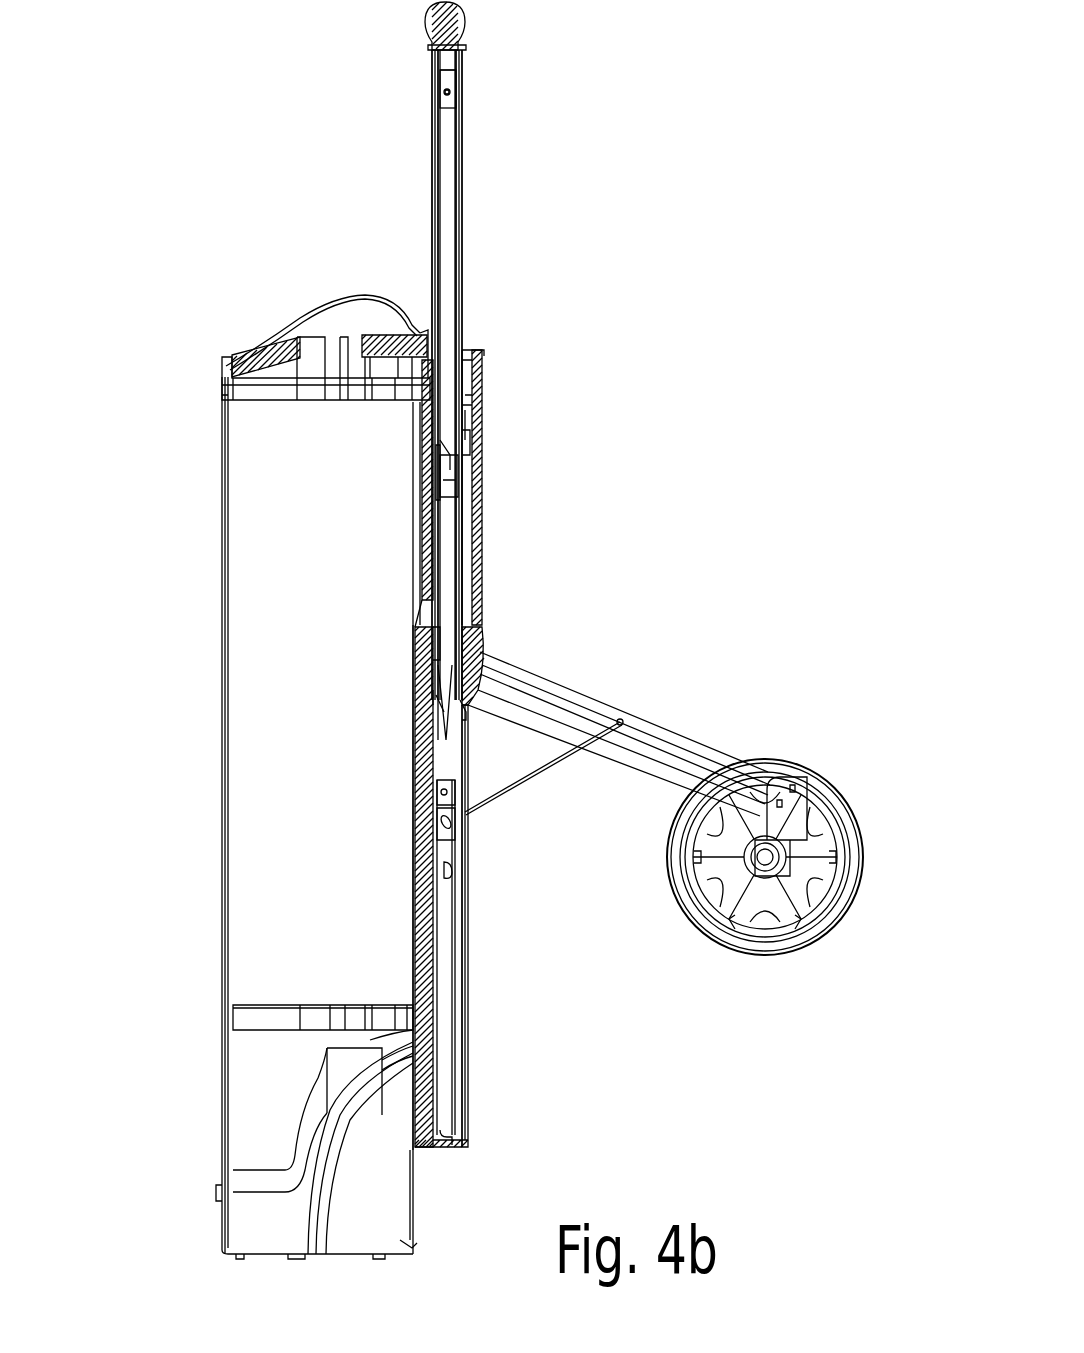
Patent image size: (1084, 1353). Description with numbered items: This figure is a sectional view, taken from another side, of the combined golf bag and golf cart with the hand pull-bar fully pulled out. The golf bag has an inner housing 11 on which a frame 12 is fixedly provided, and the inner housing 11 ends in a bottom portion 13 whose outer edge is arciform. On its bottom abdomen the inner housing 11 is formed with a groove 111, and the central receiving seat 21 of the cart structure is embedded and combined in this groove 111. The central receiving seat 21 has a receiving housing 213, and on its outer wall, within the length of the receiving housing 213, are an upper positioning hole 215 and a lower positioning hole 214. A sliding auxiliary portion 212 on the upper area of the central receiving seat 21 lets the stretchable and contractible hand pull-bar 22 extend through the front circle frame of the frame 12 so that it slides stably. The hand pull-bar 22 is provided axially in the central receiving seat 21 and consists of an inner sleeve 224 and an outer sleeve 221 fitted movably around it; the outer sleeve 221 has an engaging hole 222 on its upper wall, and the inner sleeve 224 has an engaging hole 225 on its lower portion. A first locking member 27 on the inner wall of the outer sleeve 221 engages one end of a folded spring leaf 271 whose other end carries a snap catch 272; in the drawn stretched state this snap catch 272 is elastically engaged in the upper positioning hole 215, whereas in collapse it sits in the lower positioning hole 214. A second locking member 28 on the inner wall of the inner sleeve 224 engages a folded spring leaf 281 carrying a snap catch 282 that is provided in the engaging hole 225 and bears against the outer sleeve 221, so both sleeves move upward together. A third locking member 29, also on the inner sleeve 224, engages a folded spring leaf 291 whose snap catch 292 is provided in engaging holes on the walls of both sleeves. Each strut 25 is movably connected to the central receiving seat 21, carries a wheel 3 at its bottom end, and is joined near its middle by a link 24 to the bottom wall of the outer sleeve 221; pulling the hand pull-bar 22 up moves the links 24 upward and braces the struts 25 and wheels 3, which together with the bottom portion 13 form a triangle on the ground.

The inner housing 11 is at (225, 548).
The groove 111 is at (415, 917).
The frame 12 is at (290, 332).
The bottom portion 13 is at (222, 1222).
The central receiving seat 21 is at (415, 822).
The sliding auxiliary portion 212 is at (478, 350).
The receiving housing 213 is at (452, 1100).
The lower positioning hole 214 is at (462, 1012).
The upper positioning hole 215 is at (465, 705).
The stretchable and contractible hand pull-bar 22 is at (405, 12).
The outer sleeve 221 is at (432, 172).
The engaging hole 222 is at (462, 113).
The inner sleeve 224 is at (462, 192).
The engaging hole 225 is at (462, 450).
The link 24 is at (560, 762).
The strut 25 is at (650, 727).
The first locking member 27 is at (428, 684).
The folded spring leaf 271 is at (425, 730).
The snap catch 272 is at (465, 715).
The second locking member 28 is at (425, 446).
The folded spring leaf 281 is at (475, 482).
The snap catch 282 is at (470, 445).
The third locking member 29 is at (462, 88).
The folded spring leaf 291 is at (432, 75).
The snap catch 292 is at (440, 90).
The wheel 3 is at (765, 957).